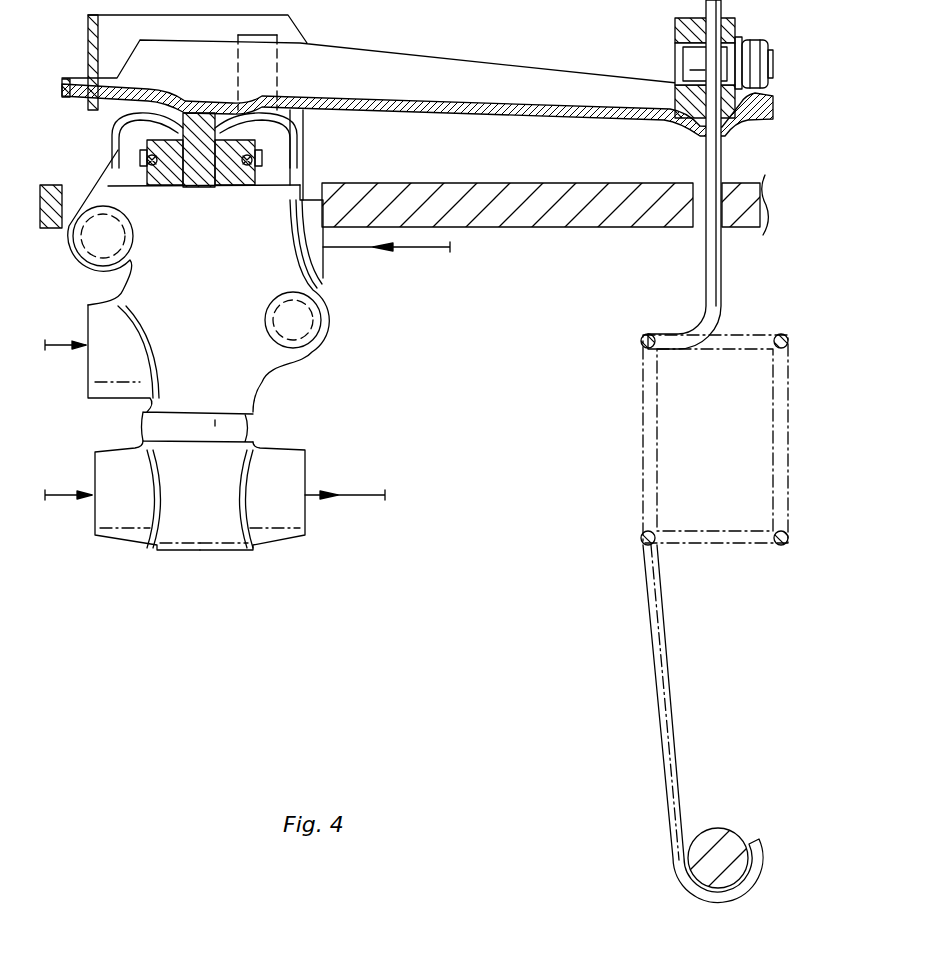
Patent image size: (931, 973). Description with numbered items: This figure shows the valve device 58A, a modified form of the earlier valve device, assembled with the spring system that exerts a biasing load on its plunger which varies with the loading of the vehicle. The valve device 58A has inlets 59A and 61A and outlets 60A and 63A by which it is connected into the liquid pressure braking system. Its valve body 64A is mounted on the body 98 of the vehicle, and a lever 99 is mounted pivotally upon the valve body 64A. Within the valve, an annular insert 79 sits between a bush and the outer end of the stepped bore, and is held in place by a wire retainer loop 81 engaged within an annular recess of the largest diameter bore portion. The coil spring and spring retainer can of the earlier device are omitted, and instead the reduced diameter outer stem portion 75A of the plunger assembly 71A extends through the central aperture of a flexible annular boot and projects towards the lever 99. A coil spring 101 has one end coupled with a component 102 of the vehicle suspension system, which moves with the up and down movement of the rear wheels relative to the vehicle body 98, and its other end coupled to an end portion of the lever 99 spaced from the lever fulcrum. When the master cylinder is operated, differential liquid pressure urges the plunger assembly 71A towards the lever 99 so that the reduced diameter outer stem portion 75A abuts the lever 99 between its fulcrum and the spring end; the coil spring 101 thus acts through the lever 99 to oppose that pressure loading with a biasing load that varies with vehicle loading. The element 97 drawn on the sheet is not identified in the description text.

The valve device 58A is at (223, 363).
The inlet 59A is at (323, 253).
The outlet 60A is at (87, 347).
The inlet 61A is at (95, 498).
The outlet 63A is at (307, 497).
The valve body 64A is at (280, 180).
The plunger assembly 71A is at (200, 181).
The reduced diameter outer stem portion 75A is at (207, 110).
The annular insert 79 is at (240, 177).
The wire retainer loop 81 is at (146, 161).
The spring cap 97 is at (112, 133).
The vehicle body 98 is at (573, 210).
The lever 99 is at (515, 107).
The coil spring 101 is at (650, 468).
The suspension component 102 is at (725, 842).